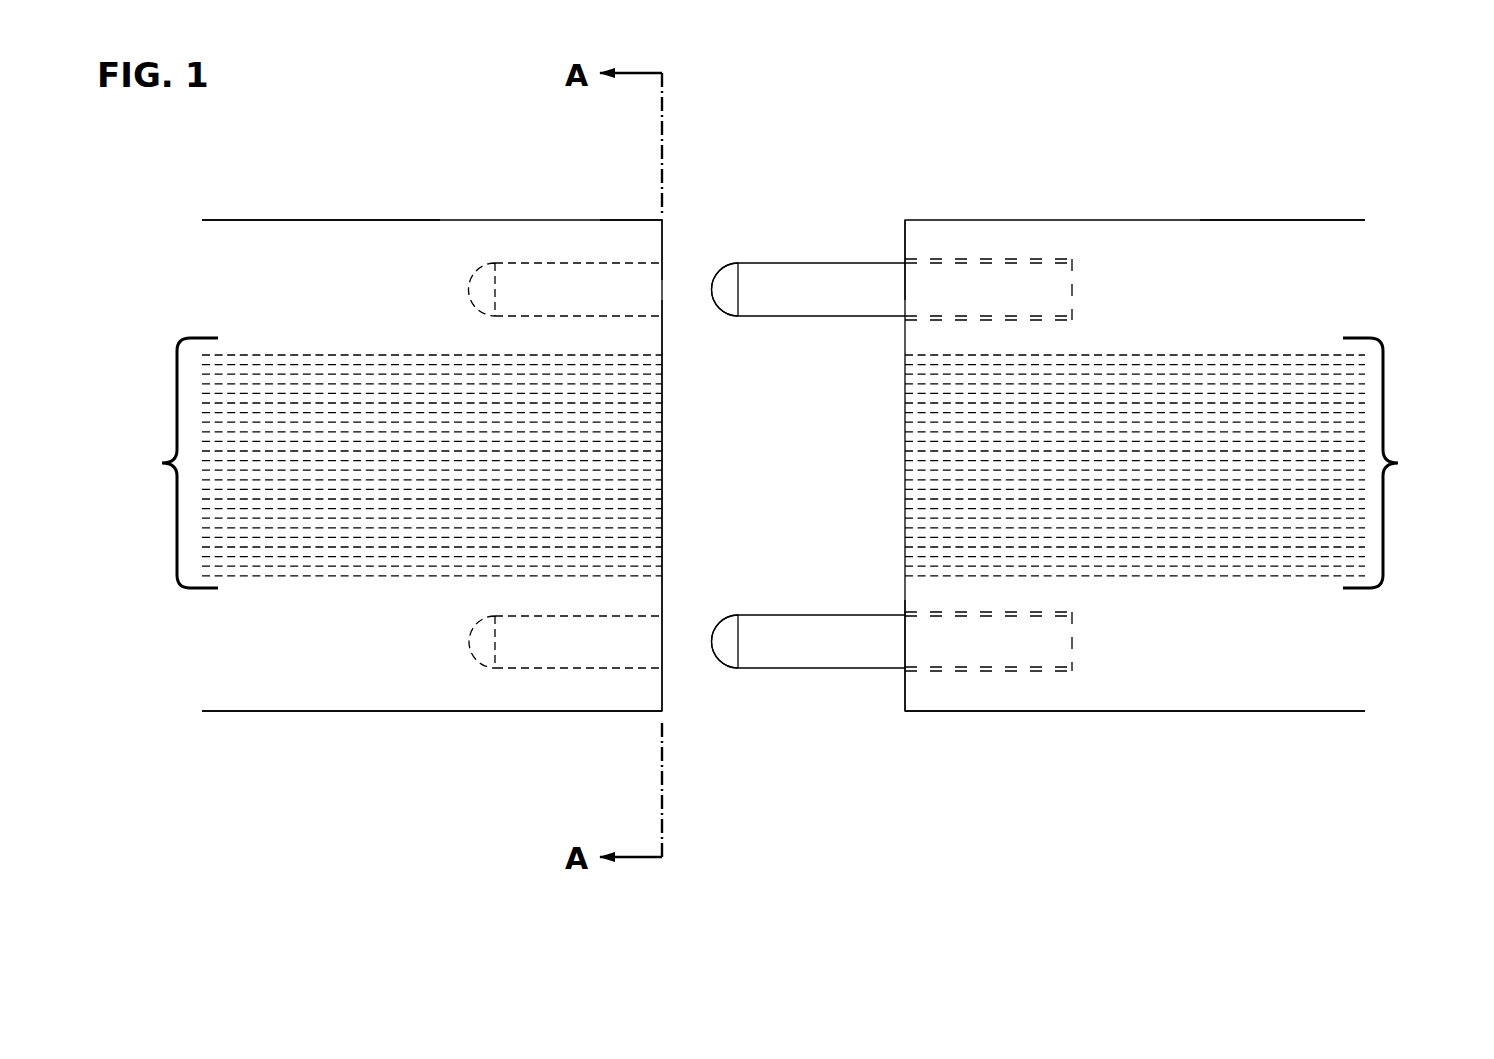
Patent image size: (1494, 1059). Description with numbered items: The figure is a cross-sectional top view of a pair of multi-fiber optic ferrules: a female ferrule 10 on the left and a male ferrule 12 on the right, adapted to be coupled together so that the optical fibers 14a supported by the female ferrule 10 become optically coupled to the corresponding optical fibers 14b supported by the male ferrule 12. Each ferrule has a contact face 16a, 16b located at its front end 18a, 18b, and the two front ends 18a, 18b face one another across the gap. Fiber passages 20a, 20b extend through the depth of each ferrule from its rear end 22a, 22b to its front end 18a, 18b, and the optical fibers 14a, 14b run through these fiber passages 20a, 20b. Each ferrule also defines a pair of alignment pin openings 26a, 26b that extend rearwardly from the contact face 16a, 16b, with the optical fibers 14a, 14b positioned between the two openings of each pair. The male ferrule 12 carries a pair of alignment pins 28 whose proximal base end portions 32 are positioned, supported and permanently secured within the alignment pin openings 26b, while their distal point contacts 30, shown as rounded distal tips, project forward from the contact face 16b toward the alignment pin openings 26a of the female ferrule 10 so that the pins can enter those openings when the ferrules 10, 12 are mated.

The female ferrule 10 is at (443, 218).
The male ferrule 12 is at (1135, 218).
The optical fibers 14a is at (332, 582).
The optical fibers 14b is at (1257, 577).
The contact face 16a is at (662, 595).
The contact face 16b is at (905, 695).
The front end 18a is at (668, 236).
The front end 18b is at (897, 237).
The fiber passages 20a is at (388, 463).
The fiber passages 20b is at (1175, 463).
The rear end 22a is at (202, 262).
The rear end 22b is at (1397, 205).
The alignment pin openings 26a is at (570, 287).
The alignment pin openings 26b is at (1010, 257).
The alignment pins 28 is at (817, 260).
The distal point contacts 30 is at (727, 300).
The proximal base end portions 32 is at (1048, 297).